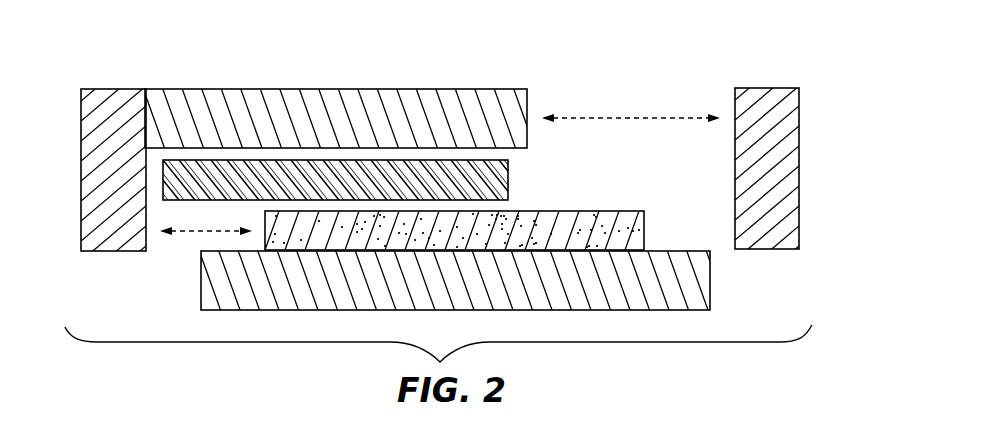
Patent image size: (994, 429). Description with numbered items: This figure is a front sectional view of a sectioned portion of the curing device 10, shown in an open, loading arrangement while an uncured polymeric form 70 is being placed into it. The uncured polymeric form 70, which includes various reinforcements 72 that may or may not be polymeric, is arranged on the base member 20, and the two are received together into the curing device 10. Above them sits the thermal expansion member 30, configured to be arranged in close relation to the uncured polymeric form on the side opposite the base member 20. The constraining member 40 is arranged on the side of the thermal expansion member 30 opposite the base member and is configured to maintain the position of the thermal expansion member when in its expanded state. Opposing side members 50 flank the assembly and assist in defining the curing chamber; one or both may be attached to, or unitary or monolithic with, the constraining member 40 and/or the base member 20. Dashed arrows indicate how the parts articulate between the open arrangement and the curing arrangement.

The curing device 10 is at (758, 43).
The base member 20 is at (201, 281).
The thermal expansion member 30 is at (508, 185).
The constraining member 40 is at (343, 89).
The side members 50 is at (113, 89).
The uncured polymeric form 70 is at (477, 204).
The reinforcements 72 is at (605, 211).